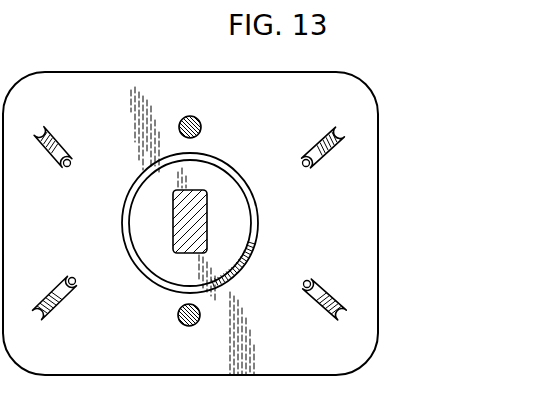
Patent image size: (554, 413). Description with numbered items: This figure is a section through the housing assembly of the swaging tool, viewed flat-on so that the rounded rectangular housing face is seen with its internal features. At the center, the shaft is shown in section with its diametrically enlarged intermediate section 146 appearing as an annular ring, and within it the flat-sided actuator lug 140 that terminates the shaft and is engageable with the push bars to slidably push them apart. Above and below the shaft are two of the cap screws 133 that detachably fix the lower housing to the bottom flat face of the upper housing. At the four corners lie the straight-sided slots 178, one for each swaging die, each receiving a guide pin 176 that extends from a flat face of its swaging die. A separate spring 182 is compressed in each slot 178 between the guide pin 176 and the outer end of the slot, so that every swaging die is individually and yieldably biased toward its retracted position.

The cap screws 133 is at (193, 116).
The actuator lug 140 is at (207, 226).
The enlarged intermediate section 146 is at (128, 229).
The guide pin 176 is at (67, 149).
The slot 178 is at (78, 166).
The spring 182 is at (50, 136).